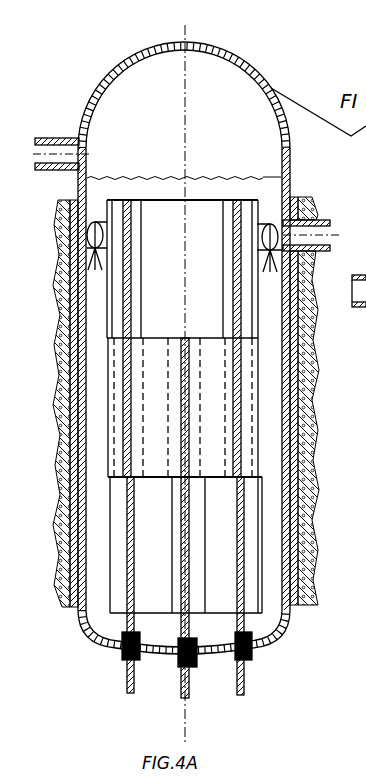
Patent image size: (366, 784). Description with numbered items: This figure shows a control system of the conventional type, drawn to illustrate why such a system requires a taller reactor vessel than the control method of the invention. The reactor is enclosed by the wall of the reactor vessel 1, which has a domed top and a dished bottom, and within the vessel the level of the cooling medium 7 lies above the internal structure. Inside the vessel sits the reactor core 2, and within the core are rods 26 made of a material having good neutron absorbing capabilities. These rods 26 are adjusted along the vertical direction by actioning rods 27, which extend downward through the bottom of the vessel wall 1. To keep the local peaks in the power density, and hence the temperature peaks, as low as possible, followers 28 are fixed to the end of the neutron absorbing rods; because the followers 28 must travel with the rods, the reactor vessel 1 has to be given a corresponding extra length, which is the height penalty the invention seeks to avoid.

The wall of the reactor vessel 1 is at (86, 107).
The level of the cooling medium 7 is at (138, 176).
The rods 26 is at (142, 203).
The reactor core 2 is at (157, 348).
The followers 28 is at (229, 478).
The actioning rods 27 is at (245, 673).